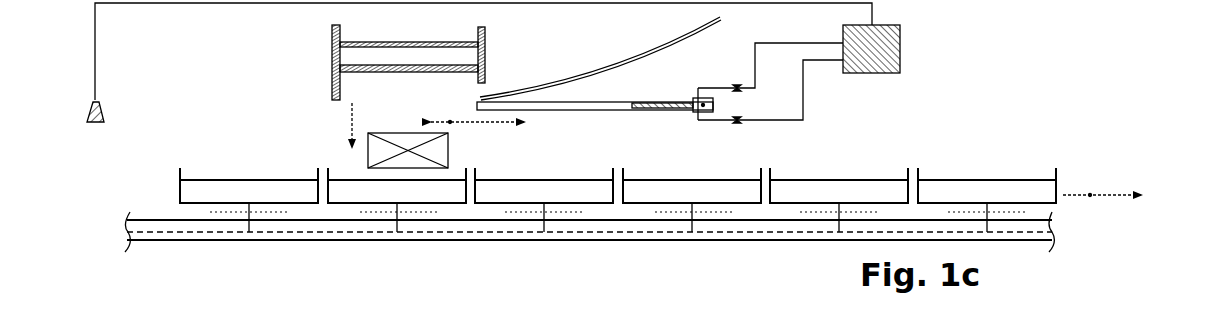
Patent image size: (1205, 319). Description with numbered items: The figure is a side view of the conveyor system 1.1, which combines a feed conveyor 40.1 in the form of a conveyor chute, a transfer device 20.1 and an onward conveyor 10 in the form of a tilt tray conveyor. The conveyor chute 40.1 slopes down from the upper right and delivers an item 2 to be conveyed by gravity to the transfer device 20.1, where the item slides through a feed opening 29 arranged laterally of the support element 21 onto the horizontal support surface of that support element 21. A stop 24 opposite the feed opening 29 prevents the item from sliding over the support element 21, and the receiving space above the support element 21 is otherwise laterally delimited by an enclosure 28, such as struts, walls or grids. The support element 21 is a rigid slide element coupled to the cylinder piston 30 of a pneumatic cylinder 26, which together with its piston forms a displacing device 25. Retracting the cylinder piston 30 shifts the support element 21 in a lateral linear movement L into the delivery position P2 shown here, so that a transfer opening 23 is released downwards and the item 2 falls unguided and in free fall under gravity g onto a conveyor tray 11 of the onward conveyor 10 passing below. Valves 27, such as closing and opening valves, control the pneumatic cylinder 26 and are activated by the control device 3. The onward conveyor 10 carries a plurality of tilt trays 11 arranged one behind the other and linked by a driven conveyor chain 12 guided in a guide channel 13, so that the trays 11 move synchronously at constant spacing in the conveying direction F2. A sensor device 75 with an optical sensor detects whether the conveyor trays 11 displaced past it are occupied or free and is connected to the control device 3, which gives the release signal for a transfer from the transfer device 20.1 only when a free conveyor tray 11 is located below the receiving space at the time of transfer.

The conveyor system 1.1 is at (233, 77).
The onward conveyor 10 is at (202, 120).
The conveyor trays 11 is at (243, 193).
The conveyor chain 12 is at (354, 233).
The guide channel 13 is at (240, 241).
The sensor device 75 is at (105, 118).
The item to be conveyed 2 is at (395, 140).
The control device 3 is at (885, 55).
The transfer device 20.1 is at (354, 56).
The support element 21 is at (520, 93).
The transfer opening 23 is at (388, 90).
The stop 24 is at (333, 93).
The displacing device 25 is at (622, 94).
The pneumatic cylinder 26 is at (700, 108).
The valves 27 is at (741, 123).
The enclosure 28 is at (358, 45).
The feed opening 29 is at (486, 62).
The cylinder piston 30 is at (672, 108).
The feed conveyor 40.1 is at (658, 41).
The gravity g is at (352, 125).
The linear movement L is at (450, 122).
The delivery position P2 is at (536, 114).
The conveying direction of the onward conveyor F2 is at (1090, 195).